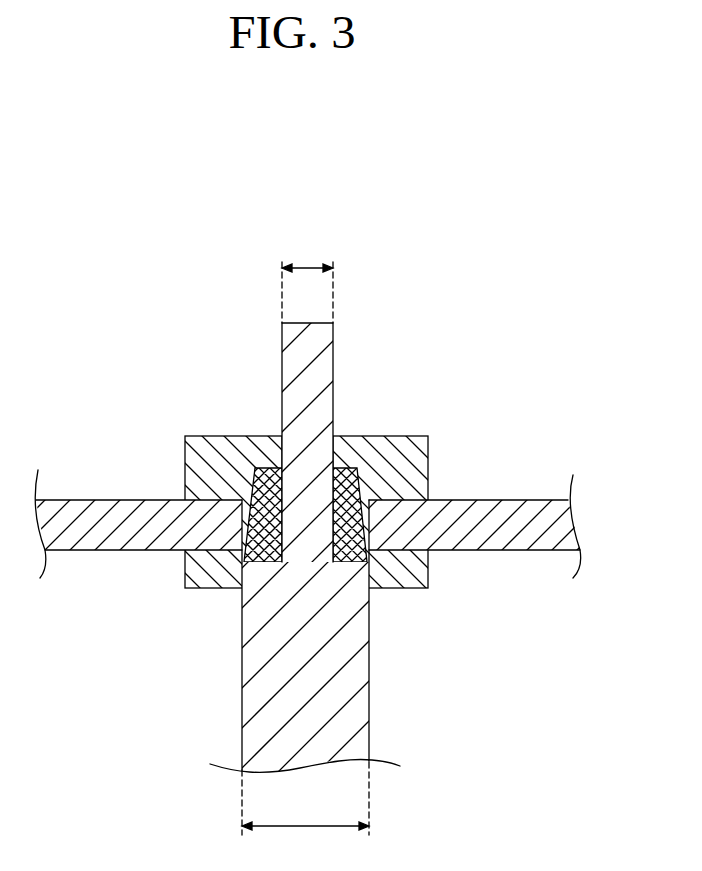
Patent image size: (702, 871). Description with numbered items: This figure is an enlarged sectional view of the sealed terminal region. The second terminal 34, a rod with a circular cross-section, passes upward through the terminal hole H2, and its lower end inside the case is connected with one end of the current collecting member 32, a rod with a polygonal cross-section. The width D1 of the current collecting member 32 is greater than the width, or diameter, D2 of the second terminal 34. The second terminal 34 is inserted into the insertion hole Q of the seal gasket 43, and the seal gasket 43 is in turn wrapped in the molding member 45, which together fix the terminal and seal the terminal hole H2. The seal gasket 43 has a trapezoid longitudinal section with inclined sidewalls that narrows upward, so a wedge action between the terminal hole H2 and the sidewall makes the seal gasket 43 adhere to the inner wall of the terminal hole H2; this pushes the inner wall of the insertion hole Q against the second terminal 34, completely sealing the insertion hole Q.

The current collecting member 32 is at (268, 678).
The second terminal 34 is at (298, 357).
The seal gasket 43 is at (348, 495).
The molding member 45 is at (395, 450).
The terminal hole H2 is at (362, 528).
The insertion hole Q is at (352, 530).
The width of the current collecting member D1 is at (305, 811).
The width of the second terminal D2 is at (307, 278).